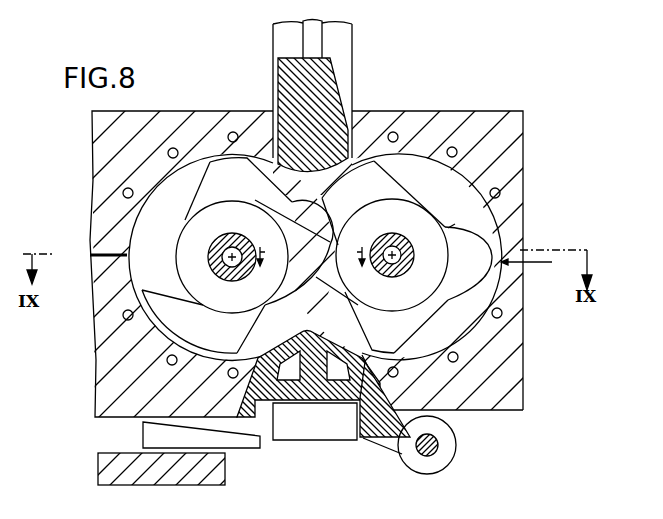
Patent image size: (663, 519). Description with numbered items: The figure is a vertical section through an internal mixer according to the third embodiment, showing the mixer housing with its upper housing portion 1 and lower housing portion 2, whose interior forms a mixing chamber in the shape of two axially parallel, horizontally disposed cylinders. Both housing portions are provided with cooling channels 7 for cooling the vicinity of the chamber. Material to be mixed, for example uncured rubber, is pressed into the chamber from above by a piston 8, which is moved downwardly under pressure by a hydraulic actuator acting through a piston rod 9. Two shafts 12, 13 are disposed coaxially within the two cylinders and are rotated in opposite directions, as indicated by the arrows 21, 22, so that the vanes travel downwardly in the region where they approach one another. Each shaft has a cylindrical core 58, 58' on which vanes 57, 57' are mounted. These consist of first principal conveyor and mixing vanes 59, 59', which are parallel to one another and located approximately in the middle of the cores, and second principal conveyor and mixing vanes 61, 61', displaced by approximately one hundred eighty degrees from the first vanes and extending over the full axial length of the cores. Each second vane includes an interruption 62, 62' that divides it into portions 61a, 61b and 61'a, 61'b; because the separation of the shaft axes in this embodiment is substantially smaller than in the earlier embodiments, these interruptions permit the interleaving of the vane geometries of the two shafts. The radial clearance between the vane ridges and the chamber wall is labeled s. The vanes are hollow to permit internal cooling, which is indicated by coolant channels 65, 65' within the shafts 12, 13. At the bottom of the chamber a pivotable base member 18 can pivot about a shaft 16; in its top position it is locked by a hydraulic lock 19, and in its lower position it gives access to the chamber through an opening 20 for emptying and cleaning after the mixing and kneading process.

The upper housing portion 1 is at (517, 129).
The lower housing portion 2 is at (512, 401).
The cooling channels 7 is at (123, 194).
The piston 8 is at (302, 108).
The piston rod 9 is at (320, 37).
The shaft 12 is at (410, 257).
The shaft 13 is at (226, 256).
The shaft 16 is at (433, 448).
The pivotable base member 18 is at (316, 378).
The hydraulic lock 19 is at (244, 442).
The opening 20 is at (363, 415).
The arrow 21 is at (351, 251).
The arrow 22 is at (273, 251).
The vanes 57 is at (392, 184).
The vanes 57' is at (164, 257).
The cylindrical core 58 is at (510, 215).
The cylindrical core 58' is at (83, 245).
The first principal conveyor and mixing vane 59 is at (353, 203).
The first principal conveyor and mixing vane 59' is at (203, 307).
The second principal conveyor and mixing vane 61 is at (417, 194).
The second principal conveyor and mixing vane 61' is at (185, 191).
The vane portion 61a is at (417, 333).
The vane portion 61b is at (486, 262).
The vane portion 61'a is at (299, 252).
The vane portion 61'b is at (251, 180).
The interruption 62 is at (443, 315).
The interruption 62' is at (279, 159).
The coolant channel 65 is at (392, 241).
The coolant channel 65' is at (232, 243).
The radial clearance s is at (533, 261).